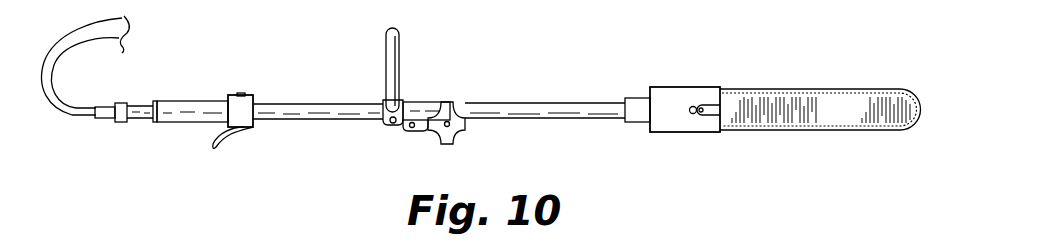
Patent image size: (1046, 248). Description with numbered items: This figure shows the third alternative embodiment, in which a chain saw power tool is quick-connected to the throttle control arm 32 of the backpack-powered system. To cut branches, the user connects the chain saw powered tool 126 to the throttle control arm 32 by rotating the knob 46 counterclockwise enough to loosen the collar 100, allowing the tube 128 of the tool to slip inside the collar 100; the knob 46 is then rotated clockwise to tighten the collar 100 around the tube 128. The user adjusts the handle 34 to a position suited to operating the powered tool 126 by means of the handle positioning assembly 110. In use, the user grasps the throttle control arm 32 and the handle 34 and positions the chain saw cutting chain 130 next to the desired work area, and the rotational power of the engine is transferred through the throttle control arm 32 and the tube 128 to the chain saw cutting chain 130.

The throttle control arm 32 is at (288, 121).
The handle 34 is at (387, 31).
The knob 46 is at (455, 140).
The collar 100 is at (430, 101).
The handle positioning assembly 110 is at (392, 130).
The chain saw powered tool 126 is at (673, 87).
The tube 128 is at (480, 103).
The chain saw cutting chain 130 is at (838, 89).